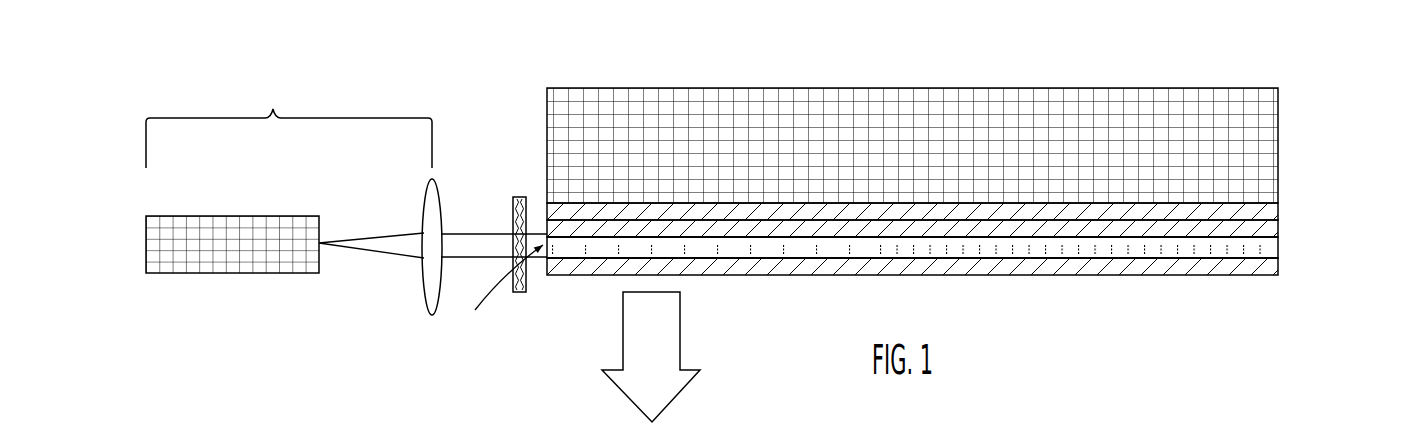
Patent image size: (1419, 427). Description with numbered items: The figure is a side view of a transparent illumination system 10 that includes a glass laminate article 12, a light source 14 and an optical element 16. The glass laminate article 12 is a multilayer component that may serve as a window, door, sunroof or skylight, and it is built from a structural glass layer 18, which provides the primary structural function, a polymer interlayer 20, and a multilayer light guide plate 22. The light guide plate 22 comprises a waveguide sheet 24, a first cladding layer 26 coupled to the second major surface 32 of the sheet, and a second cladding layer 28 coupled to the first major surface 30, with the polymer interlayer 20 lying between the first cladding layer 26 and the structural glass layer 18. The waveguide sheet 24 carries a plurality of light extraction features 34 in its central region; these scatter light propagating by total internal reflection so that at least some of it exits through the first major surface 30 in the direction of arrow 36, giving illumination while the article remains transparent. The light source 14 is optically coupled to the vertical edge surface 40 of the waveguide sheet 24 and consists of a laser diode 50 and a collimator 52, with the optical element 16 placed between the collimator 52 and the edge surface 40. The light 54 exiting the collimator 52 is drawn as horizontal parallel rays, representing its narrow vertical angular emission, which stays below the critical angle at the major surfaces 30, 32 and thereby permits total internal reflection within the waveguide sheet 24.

The transparent illumination system 10 is at (1226, 37).
The glass laminate article 12 is at (1358, 72).
The light source 14 is at (346, 212).
The optical element 16 is at (520, 197).
The structural glass layer 18 is at (1265, 125).
The polymer interlayer 20 is at (1272, 212).
The multilayer light guide plate 22 is at (1280, 222).
The waveguide sheet 24 is at (1167, 250).
The first cladding layer 26 is at (1223, 232).
The second cladding layer 28 is at (1085, 268).
The first major surface 30 is at (1025, 263).
The second major surface 32 is at (915, 236).
The light extraction features 34 is at (652, 250).
The arrow 36 is at (663, 403).
The vertical edge surface 40 is at (504, 300).
The laser diode 50 is at (225, 273).
The collimator 52 is at (423, 297).
The light 54 is at (480, 233).